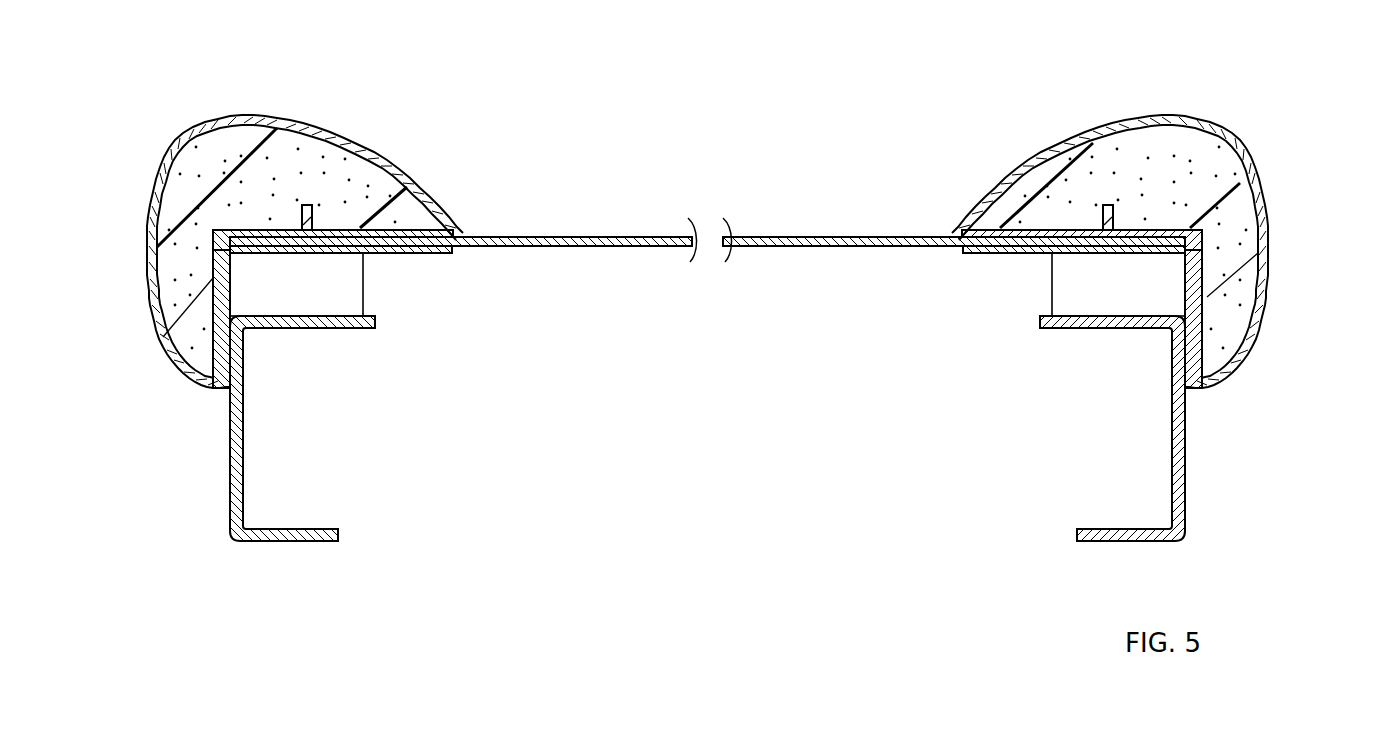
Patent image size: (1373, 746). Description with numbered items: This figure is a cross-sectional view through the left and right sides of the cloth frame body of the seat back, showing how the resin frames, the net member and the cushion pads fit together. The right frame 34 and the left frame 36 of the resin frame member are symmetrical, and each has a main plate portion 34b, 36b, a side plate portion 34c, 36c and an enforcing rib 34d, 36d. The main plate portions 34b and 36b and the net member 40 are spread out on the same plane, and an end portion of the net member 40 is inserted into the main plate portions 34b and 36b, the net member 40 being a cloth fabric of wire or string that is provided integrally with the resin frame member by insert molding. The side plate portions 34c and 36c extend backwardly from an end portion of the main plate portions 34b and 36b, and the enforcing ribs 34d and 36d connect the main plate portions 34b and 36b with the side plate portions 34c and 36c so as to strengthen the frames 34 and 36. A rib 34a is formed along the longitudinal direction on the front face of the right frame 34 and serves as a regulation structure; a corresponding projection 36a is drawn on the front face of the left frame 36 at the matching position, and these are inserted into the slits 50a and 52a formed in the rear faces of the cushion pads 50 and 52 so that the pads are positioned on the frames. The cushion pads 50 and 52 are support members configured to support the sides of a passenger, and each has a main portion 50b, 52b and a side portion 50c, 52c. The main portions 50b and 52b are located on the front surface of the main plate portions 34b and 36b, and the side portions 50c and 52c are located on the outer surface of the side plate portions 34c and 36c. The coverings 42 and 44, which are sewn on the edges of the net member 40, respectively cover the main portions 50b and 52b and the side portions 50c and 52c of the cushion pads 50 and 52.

The right frame 34 is at (414, 228).
The rib 34a is at (318, 212).
The main plate portion 34b is at (407, 252).
The side plate portion 34c is at (218, 340).
The enforcing rib 34d is at (323, 300).
The left frame 36 is at (991, 233).
The protrusion of bracket 36a is at (996, 227).
The main plate portion 36b is at (1007, 252).
The side plate portion 36c is at (1197, 330).
The enforcing rib 36d is at (1102, 297).
The net member 40 is at (608, 237).
The covering 42 is at (1069, 139).
The covering 44 is at (343, 134).
The cushion pad 50 is at (1197, 121).
The slit 50a is at (1117, 215).
The main portion 50b is at (1207, 168).
The side portion 50c is at (1238, 293).
The cushion pad 52 is at (216, 121).
The slit 52a is at (298, 215).
The main portion 52b is at (207, 167).
The side portion 52c is at (176, 292).